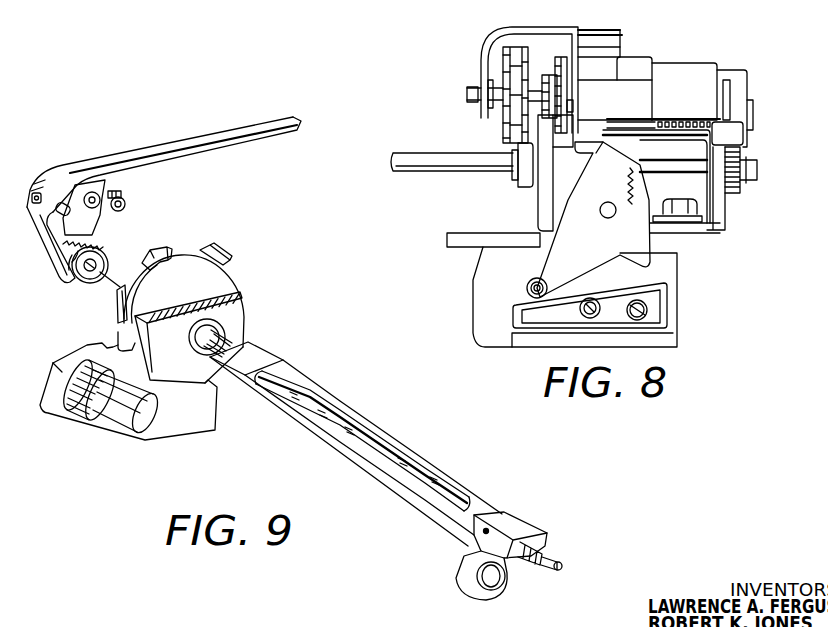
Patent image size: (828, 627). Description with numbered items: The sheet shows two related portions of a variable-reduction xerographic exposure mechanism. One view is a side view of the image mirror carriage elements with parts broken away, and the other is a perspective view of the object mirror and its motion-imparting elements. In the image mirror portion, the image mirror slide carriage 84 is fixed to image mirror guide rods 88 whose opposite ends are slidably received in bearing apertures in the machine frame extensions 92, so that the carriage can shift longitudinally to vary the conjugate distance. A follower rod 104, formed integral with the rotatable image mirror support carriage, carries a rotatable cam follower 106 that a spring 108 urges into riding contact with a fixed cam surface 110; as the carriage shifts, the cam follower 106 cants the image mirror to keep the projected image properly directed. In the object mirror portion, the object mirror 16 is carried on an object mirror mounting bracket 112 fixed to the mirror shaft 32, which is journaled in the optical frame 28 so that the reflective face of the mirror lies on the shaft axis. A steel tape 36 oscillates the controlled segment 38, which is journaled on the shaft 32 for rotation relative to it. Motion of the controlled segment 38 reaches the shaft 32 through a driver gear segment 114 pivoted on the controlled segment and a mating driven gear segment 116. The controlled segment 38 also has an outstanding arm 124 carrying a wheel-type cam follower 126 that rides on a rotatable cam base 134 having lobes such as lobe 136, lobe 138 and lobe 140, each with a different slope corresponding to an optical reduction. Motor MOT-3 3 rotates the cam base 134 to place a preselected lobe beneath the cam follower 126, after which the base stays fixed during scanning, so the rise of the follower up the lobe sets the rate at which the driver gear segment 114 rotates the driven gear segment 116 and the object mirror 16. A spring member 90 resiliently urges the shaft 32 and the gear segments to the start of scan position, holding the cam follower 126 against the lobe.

In FIG. 9, the steel tape 36 is at (185, 142).
In FIG. 9, the controlled segment 38 is at (52, 253).
In FIG. 9, the outstanding arm 124 is at (97, 187).
In FIG. 9, the wheel-type cam follower 126 is at (126, 203).
In FIG. 9, the driver gear segment 114 is at (88, 225).
In FIG. 9, the driven gear segment 116 is at (103, 243).
In FIG. 9, the lobe 138 is at (163, 243).
In FIG. 9, the lobe 136 is at (237, 241).
In FIG. 9, the cam base 134 is at (223, 283).
In FIG. 9, the lobe 140 is at (117, 300).
In FIG. 9, the optical frame 28 is at (237, 328).
In FIG. 9, the mirror shaft 32 is at (200, 358).
In FIG. 9, the motor MOT- 3 is at (118, 415).
In FIG. 9, the object mirror 16 is at (330, 418).
In FIG. 9, the object mirror mounting bracket 112 is at (360, 465).
In FIG. 9, the spring member 90 is at (506, 580).
In FIG. 8, the image mirror slide carriage 84 is at (633, 67).
In FIG. 8, the image mirror guide rods 88 is at (488, 162).
In FIG. 8, the machine frame extensions 92 is at (713, 220).
In FIG. 8, the spring 108 is at (623, 190).
In FIG. 8, the follower rod 104 is at (558, 258).
In FIG. 8, the cam follower 106 is at (575, 297).
In FIG. 8, the fixed cam surface 110 is at (633, 298).